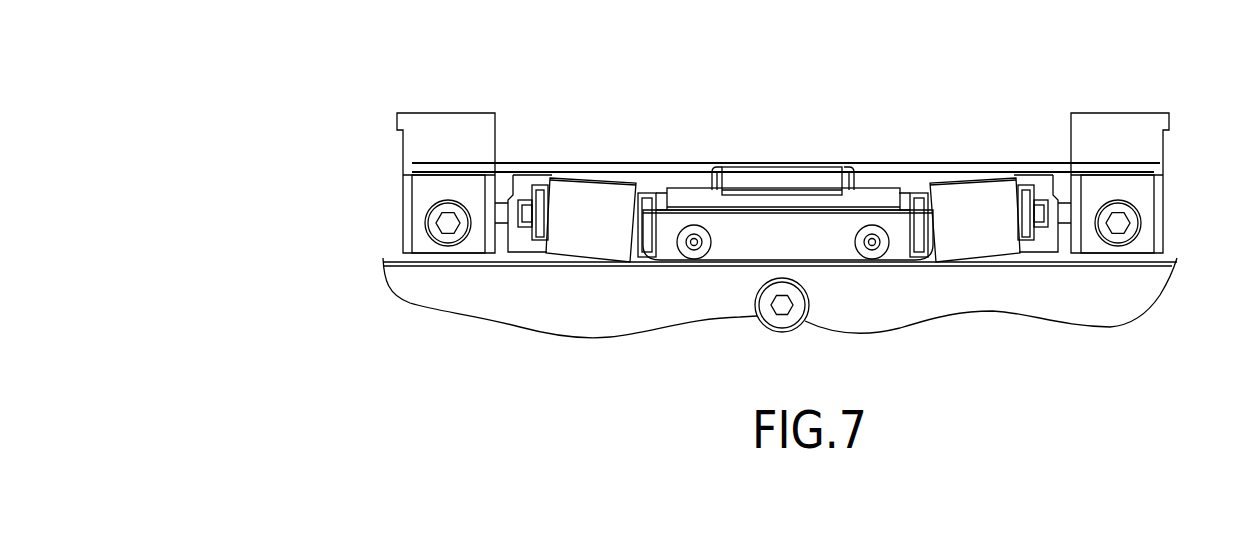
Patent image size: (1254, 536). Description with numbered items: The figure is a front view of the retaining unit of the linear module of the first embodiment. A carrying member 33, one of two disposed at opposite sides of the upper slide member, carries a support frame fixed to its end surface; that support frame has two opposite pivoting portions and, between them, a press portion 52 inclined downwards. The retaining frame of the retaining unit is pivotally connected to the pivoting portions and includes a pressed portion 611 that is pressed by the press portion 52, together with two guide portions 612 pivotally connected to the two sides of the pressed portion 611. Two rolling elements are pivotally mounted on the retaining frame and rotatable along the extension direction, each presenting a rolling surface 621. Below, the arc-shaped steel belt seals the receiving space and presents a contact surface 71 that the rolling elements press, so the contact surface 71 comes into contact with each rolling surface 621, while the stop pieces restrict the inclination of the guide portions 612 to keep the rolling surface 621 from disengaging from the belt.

The carrying member 33 is at (1123, 130).
The press portion 52 is at (785, 177).
The pressed portion 611 is at (887, 200).
The guide portion 612 is at (648, 188).
The rolling surface 621 is at (591, 198).
The contact surface 71 is at (523, 242).